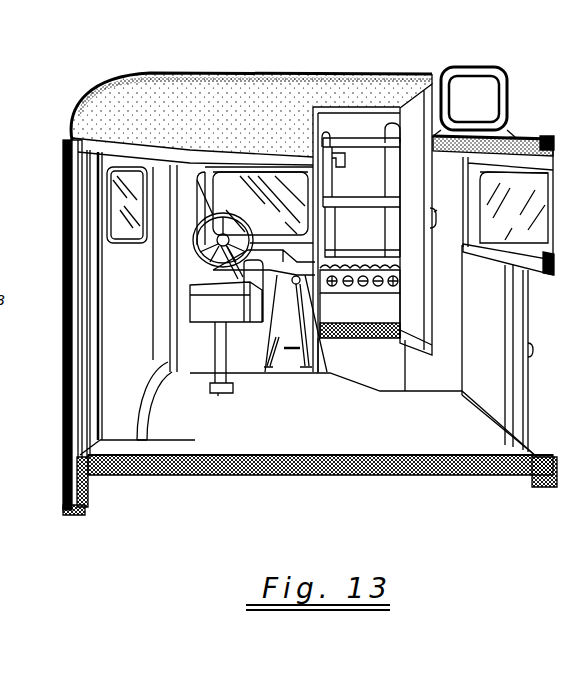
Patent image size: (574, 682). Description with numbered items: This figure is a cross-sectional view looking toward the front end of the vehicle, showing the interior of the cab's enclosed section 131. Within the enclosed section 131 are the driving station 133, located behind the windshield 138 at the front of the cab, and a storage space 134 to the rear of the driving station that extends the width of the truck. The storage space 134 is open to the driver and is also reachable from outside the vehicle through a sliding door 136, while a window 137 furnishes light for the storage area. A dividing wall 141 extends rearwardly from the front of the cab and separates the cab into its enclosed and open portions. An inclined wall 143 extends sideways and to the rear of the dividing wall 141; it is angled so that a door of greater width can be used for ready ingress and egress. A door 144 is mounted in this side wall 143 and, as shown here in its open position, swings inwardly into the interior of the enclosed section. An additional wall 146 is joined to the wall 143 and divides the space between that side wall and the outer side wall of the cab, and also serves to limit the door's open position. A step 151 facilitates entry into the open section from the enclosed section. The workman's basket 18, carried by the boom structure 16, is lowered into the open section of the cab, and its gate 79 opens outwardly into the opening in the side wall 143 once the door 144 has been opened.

The enclosed section 131 is at (71, 102).
The inclined wall 143 is at (367, 107).
The boom structure 16 is at (508, 104).
The gate 79 is at (363, 146).
The windshield 138 is at (272, 211).
The dividing wall 141 is at (312, 230).
The workman's basket 18 is at (403, 235).
The window 137 is at (512, 216).
The additional wall 146 is at (442, 262).
The sliding door 136 is at (510, 322).
The step 151 is at (353, 330).
The door 144 is at (413, 308).
The storage space 134 is at (483, 384).
The driving station 133 is at (255, 380).